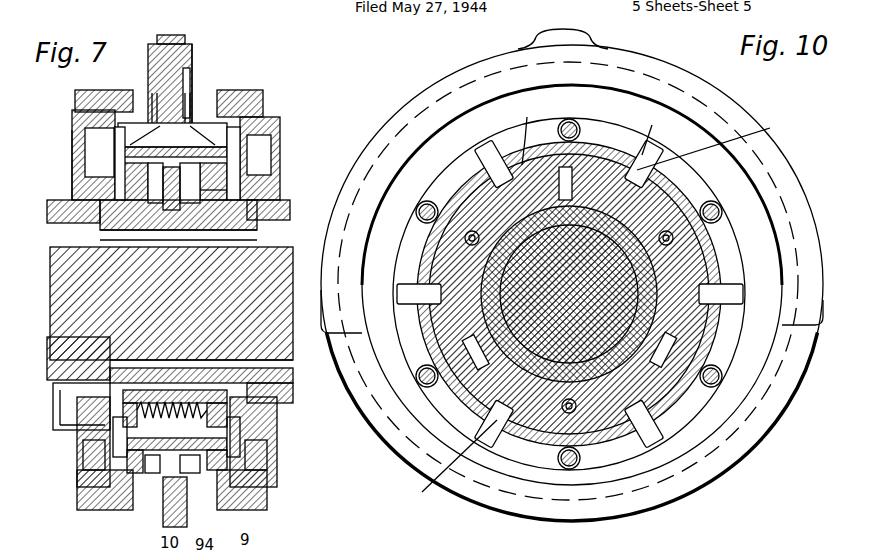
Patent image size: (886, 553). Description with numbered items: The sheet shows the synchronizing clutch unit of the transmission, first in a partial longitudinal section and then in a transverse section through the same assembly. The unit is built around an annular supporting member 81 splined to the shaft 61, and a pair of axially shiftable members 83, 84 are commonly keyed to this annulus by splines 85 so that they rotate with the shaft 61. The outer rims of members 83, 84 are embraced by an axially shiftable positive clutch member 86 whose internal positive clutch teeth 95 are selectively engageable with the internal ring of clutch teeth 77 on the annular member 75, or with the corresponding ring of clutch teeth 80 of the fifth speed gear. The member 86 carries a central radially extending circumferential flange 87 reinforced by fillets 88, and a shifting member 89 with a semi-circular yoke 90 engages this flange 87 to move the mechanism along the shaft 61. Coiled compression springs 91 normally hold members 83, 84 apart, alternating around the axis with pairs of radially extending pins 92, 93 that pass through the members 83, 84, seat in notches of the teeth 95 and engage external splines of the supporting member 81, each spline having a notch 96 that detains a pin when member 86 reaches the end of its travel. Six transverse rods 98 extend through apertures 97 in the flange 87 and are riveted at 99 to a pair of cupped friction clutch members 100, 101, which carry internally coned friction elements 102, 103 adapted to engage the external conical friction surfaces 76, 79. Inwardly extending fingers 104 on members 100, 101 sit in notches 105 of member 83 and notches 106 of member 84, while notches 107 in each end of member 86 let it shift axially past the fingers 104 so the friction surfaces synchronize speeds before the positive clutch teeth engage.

In FIG. 7, the shaft 61 is at (290, 337).
In FIG. 10, the shaft 61 is at (792, 327).
In FIG. 7, the annular member 75 is at (75, 140).
In FIG. 7, the external conical friction clutch surface 76 is at (90, 122).
In FIG. 7, the internal ring of positive gear-like clutch teeth 77 is at (95, 433).
In FIG. 7, the external conical friction surface 79 is at (260, 125).
In FIG. 7, the internal ring of positive gear-like clutch teeth 80 is at (248, 165).
In FIG. 7, the annular supporting member 81 is at (285, 374).
In FIG. 10, the annular supporting member 81 is at (540, 440).
In FIG. 7, the axially shiftable member 83 is at (110, 407).
In FIG. 7, the axially shiftable member 84 is at (262, 440).
In FIG. 10, the axially shiftable member 84 is at (524, 131).
In FIG. 7, the splines 85 is at (140, 403).
In FIG. 10, the splines 85 is at (698, 325).
In FIG. 7, the axially shiftable positive clutch member 86 is at (150, 120).
In FIG. 10, the axially shiftable positive clutch member 86 is at (612, 427).
In FIG. 7, the circumferential flange 87 is at (190, 60).
In FIG. 10, the circumferential flange 87 is at (760, 424).
In FIG. 7, the fillets 88 is at (207, 143).
In FIG. 7, the shifting member 89 is at (162, 38).
In FIG. 10, the shifting member 89 is at (574, 38).
In FIG. 10, the semi-circular yoke 90 is at (346, 184).
In FIG. 7, the coiled compression springs 91 is at (168, 400).
In FIG. 10, the coiled compression springs 91 is at (471, 231).
In FIG. 7, the radially extending pin 92 is at (62, 275).
In FIG. 7, the radially extending pin 93 is at (250, 237).
In FIG. 10, the radially extending pin 93 is at (600, 145).
In FIG. 10, the internal positive clutch teeth 95 is at (560, 168).
In FIG. 7, the notch or recess 96 is at (183, 207).
In FIG. 10, the notch or recess 96 is at (657, 133).
In FIG. 10, the apertures 97 is at (566, 120).
In FIG. 7, the bar or rod 98 is at (203, 124).
In FIG. 10, the bar or rod 98 is at (416, 213).
In FIG. 7, the rivets 99 is at (140, 147).
In FIG. 7, the cupped friction clutch member 100 is at (78, 100).
In FIG. 7, the cupped friction clutch member 101 is at (245, 96).
In FIG. 7, the internally coned annular friction element 102 is at (85, 492).
In FIG. 7, the internally coned annular friction element 103 is at (265, 488).
In FIG. 7, the fingers 104 is at (113, 153).
In FIG. 7, the recesses or notches 105 is at (122, 190).
In FIG. 7, the notches or recesses 106 is at (225, 192).
In FIG. 10, the notches 107 is at (596, 310).